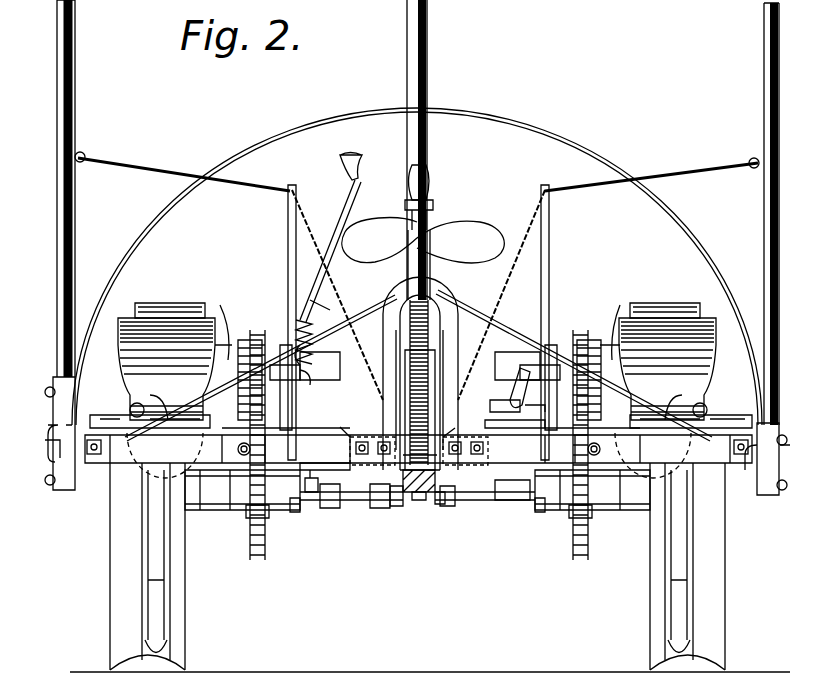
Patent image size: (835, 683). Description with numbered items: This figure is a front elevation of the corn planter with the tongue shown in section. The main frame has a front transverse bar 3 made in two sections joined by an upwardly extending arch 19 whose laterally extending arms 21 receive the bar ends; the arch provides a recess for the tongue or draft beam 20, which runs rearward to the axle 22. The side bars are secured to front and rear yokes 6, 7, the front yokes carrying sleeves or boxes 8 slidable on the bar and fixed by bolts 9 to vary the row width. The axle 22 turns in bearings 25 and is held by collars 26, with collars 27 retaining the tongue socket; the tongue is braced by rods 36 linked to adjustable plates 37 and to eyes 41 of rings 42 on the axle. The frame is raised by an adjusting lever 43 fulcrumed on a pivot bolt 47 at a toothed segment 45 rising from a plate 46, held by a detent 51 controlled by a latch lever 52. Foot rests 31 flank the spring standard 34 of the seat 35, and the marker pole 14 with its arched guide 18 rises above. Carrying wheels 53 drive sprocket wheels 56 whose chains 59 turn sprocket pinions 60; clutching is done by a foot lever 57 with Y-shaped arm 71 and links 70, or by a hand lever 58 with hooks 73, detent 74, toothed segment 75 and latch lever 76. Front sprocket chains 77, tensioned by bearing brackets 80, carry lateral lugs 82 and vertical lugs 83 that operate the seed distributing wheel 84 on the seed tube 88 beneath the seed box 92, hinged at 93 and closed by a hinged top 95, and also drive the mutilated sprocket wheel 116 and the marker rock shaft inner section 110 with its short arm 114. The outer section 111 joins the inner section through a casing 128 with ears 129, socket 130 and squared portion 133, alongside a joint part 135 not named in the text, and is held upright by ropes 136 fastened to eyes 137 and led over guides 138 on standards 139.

The front transverse bar 3 is at (418, 455).
The front yoke 6 is at (420, 443).
The rear yoke 7 is at (515, 428).
The sleeve or box 8 is at (228, 452).
The bolt 9 is at (419, 458).
The marker pole 14 is at (427, 67).
The guide 18 is at (512, 120).
The arch 19 is at (393, 342).
The tongue or draft beam 20 is at (415, 502).
The laterally extending arm 21 is at (398, 424).
The axle 22 is at (345, 508).
The bearing 25 is at (417, 490).
The collar 26 is at (518, 505).
The collar 27 is at (395, 506).
The foot rest 31 is at (419, 454).
The spring standard 34 is at (430, 272).
The seat 35 is at (423, 240).
The brace rod 36 is at (370, 488).
The adjustable plate 37 is at (425, 495).
The eye 41 is at (530, 505).
The collar or ring 42 is at (296, 514).
The adjusting lever 43 is at (430, 220).
The toothed segment 45 is at (396, 412).
The plate 46 is at (438, 505).
The pivot bolt 47 is at (307, 478).
The spring actuated pawl or detent 51 is at (428, 362).
The latch lever 52 is at (428, 181).
The carrying wheel 53 is at (110, 565).
The driving sprocket wheel 56 is at (265, 525).
The foot lever 57 is at (505, 402).
The hand lever 58 is at (345, 211).
The sprocket chain 59 is at (250, 514).
The sprocket pinion 60 is at (278, 365).
The link 70 is at (522, 378).
The Y-shaped arm 71 is at (526, 419).
The terminal hook 73 is at (310, 385).
The spring actuated detent 74 is at (300, 318).
The toothed segment 75 is at (296, 340).
The latch lever 76 is at (342, 156).
The front sprocket chain 77 is at (283, 345).
The adjustable bearing bracket 80 is at (205, 405).
The laterally projecting lug 82 is at (414, 323).
The vertically projecting lug 83 is at (246, 340).
The seed distributing wheel 84 is at (160, 418).
The seed tube 88 is at (146, 540).
The seed box 92 is at (417, 369).
The hinge 93 is at (130, 407).
The hinged top 95 is at (154, 312).
The inner section of hill marking rock shaft 110 is at (378, 510).
The outer hinged section of marker shaft 111 is at (75, 97).
The short arm 114 is at (435, 412).
The mutilated sprocket wheel 116 is at (412, 442).
The box or casing 128 is at (58, 405).
The perforated ear or flange 129 is at (48, 389).
The socket 130 is at (48, 452).
The squared outer portion 133 is at (92, 456).
The plate 135 is at (50, 440).
The rope 136 is at (228, 180).
The eye 137 is at (81, 154).
The guide 138 is at (418, 311).
The standard 139 is at (288, 240).